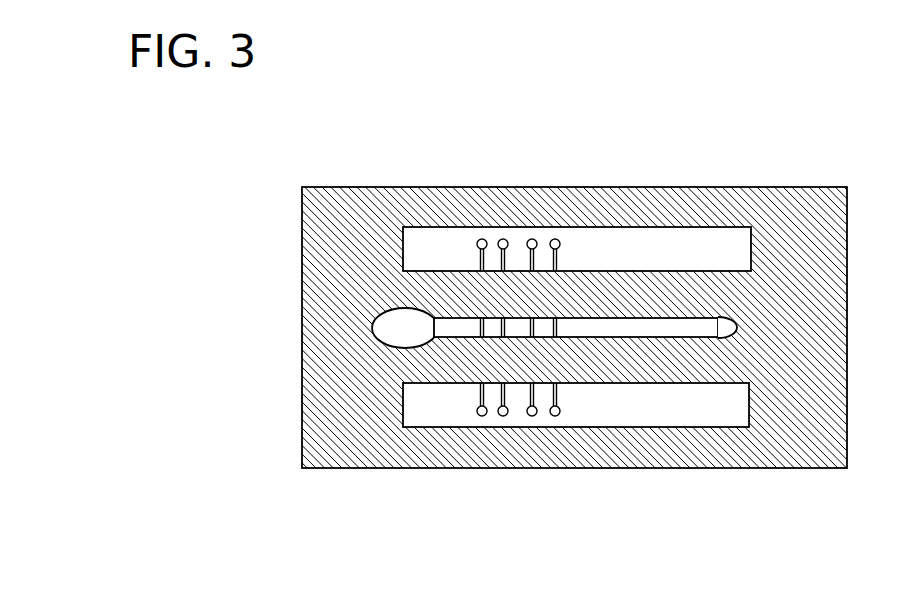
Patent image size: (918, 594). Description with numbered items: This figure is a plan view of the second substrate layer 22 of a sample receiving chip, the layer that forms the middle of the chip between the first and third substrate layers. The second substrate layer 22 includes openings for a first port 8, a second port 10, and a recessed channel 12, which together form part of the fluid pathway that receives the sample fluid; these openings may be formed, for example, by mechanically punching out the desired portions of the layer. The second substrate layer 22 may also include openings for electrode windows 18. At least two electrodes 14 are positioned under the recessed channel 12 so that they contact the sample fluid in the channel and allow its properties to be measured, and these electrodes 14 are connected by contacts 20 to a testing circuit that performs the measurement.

The first port 8 is at (372, 321).
The second port 10 is at (738, 325).
The recessed channel 12 is at (645, 337).
The electrodes 14 is at (557, 257).
The electrode windows 18 is at (512, 226).
The contacts 20 is at (480, 416).
The second substrate layer 22 is at (350, 258).